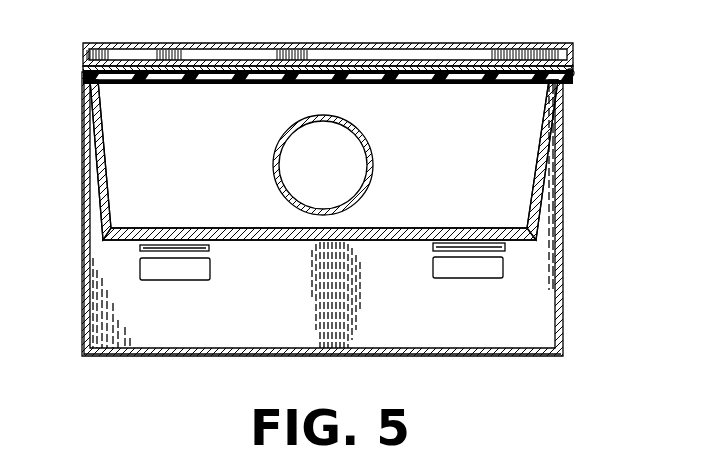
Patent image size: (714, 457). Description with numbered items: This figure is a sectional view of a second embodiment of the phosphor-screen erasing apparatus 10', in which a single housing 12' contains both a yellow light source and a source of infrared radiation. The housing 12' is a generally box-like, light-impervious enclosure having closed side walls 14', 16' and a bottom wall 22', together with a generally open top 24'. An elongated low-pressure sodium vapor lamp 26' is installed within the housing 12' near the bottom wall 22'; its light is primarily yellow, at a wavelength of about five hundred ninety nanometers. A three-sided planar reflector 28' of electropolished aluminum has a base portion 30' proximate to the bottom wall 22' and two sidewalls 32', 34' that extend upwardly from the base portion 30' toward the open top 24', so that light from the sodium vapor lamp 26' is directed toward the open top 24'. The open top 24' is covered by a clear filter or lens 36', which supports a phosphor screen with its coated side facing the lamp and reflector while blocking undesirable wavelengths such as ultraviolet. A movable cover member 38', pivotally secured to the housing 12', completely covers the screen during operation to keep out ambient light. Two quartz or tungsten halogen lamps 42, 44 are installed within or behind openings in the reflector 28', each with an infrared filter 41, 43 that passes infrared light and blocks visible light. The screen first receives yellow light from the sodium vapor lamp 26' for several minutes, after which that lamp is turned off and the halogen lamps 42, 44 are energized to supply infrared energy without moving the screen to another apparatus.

The apparatus 10' is at (328, 199).
The housing 12' is at (363, 214).
The side wall 14' is at (596, 187).
The side wall 16' is at (58, 214).
The bottom wall 22' is at (322, 374).
The open top 24' is at (324, 121).
The sodium vapor lamp 26' is at (323, 165).
The reflector 28' is at (319, 259).
The base portion 30' is at (369, 294).
The reflector sidewall 32' is at (515, 160).
The reflector sidewall 34' is at (132, 160).
The filter 36' is at (328, 97).
The cover member 38' is at (328, 40).
The infrared filter 41 is at (505, 247).
The halogen lamp 42 is at (468, 279).
The infrared filter 43 is at (140, 248).
The halogen lamp 44 is at (173, 281).